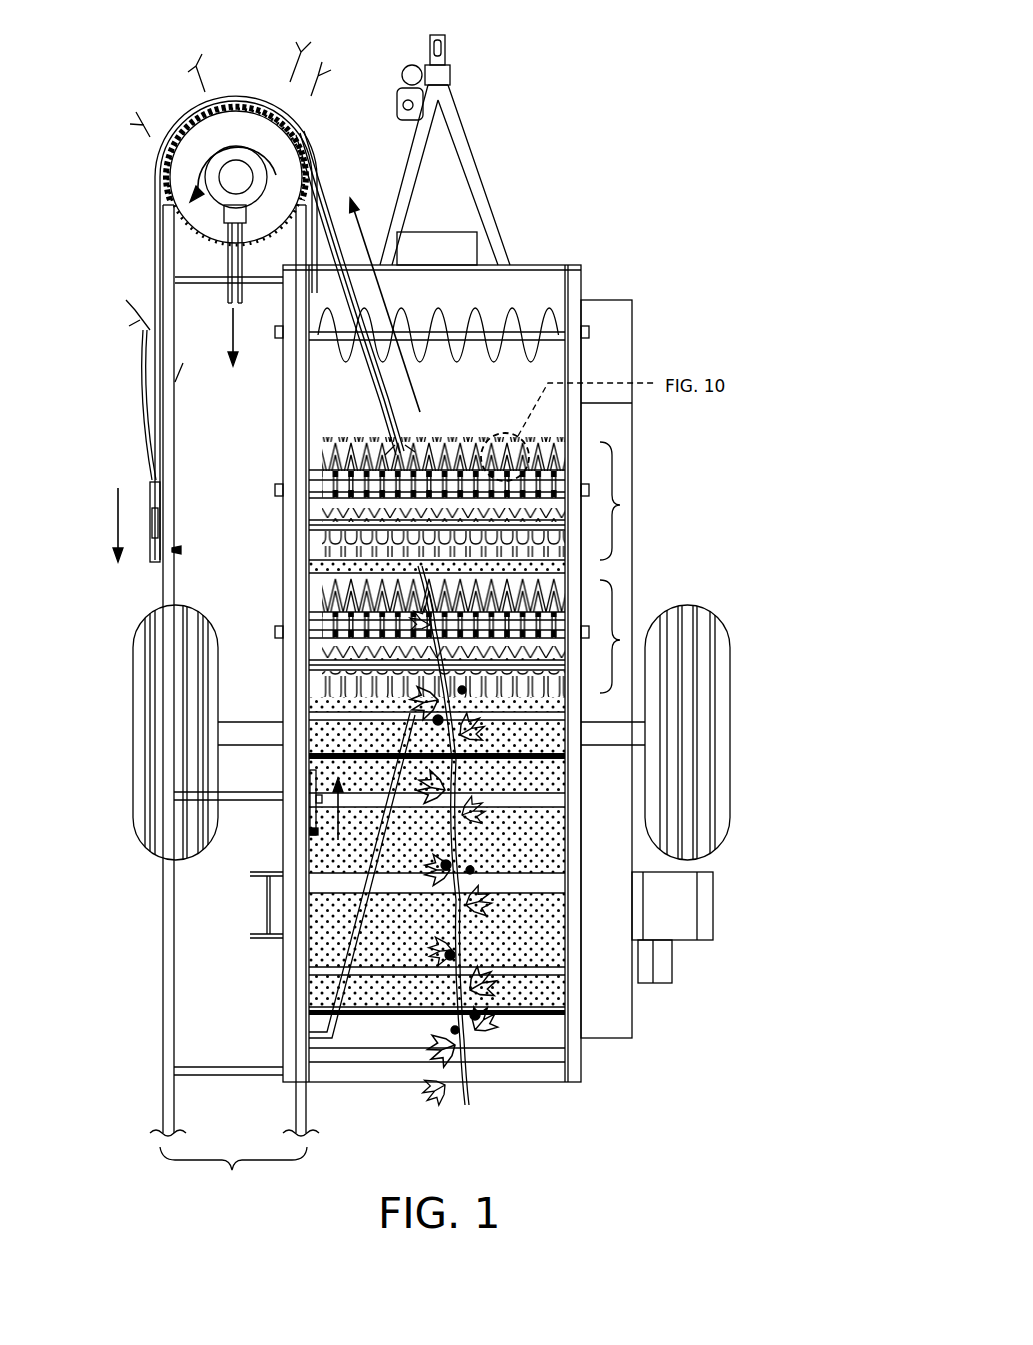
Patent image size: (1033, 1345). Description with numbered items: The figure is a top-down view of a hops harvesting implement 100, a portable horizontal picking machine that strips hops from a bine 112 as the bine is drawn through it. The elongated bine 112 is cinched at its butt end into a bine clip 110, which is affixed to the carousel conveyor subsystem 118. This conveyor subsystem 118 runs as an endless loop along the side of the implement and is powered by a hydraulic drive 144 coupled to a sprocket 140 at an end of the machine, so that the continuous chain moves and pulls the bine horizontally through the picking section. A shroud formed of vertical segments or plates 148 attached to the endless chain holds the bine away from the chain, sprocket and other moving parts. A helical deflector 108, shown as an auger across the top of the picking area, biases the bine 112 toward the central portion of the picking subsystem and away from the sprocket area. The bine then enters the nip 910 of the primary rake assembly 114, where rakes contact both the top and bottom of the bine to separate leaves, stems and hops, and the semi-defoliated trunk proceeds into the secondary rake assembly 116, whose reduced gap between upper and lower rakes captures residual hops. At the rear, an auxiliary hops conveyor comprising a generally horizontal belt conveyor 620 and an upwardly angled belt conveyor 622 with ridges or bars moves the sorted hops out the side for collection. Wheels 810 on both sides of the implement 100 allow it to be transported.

The hops harvesting implement 100 is at (542, 70).
The helical deflector 108 is at (407, 308).
The bine clip 110 is at (150, 480).
The bine 112 is at (437, 312).
The primary rake assembly 114 is at (620, 640).
The secondary rake assembly 116 is at (620, 505).
The carousel conveyor subsystem 118 is at (148, 120).
The sprocket 140 is at (213, 238).
The hydraulic drive 144 is at (220, 207).
The vertical segments or plates 148 is at (322, 228).
The horizontal belt conveyor 620 is at (267, 915).
The upwardly angled belt conveyor 622 is at (713, 905).
The wheels 810 is at (133, 678).
The nip 910 is at (499, 722).